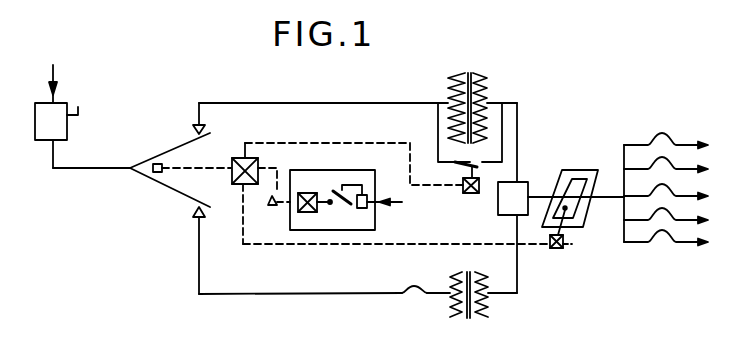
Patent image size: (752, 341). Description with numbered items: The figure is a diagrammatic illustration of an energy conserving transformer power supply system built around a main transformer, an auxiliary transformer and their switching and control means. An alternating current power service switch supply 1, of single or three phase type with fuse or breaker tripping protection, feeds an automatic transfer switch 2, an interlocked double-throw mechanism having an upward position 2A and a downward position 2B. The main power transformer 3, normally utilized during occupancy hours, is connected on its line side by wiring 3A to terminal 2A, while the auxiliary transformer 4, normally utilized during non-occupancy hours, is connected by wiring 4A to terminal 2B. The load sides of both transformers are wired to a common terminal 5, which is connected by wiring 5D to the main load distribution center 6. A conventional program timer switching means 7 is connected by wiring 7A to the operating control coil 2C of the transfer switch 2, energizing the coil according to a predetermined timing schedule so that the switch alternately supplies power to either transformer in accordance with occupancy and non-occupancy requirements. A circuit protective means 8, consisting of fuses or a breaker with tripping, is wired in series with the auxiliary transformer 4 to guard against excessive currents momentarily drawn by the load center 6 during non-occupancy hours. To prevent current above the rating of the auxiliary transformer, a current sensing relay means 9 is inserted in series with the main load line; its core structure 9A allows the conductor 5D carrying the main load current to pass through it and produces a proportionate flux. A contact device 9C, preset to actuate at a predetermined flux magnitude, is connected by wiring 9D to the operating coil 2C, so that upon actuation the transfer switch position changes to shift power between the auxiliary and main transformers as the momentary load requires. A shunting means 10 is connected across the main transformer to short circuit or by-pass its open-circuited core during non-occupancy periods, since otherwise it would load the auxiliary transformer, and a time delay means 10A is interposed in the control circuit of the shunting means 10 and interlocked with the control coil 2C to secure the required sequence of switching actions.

The alternating current power service switch supply 1 is at (63, 132).
The automatic transfer switch 2 is at (150, 180).
The upward position 2A is at (185, 121).
The downward position 2B is at (192, 212).
The operating control coil 2C is at (232, 160).
The main power transformer 3 is at (484, 81).
The wiring 3A is at (398, 102).
The auxiliary transformer 4 is at (462, 318).
The wiring 4A is at (356, 294).
The common terminal 5 is at (504, 237).
The wiring 5D is at (611, 200).
The main load distribution center 6 is at (625, 144).
The program timer switching means 7 is at (375, 190).
The wiring 7A is at (266, 206).
The circuit protective means 8 is at (414, 301).
The current sensing relay means 9 is at (572, 172).
The core structure 9A is at (592, 178).
The contact device 9C is at (556, 239).
The wiring 9D is at (407, 235).
The shunting means 10 is at (455, 163).
The time delay means 10A is at (463, 191).